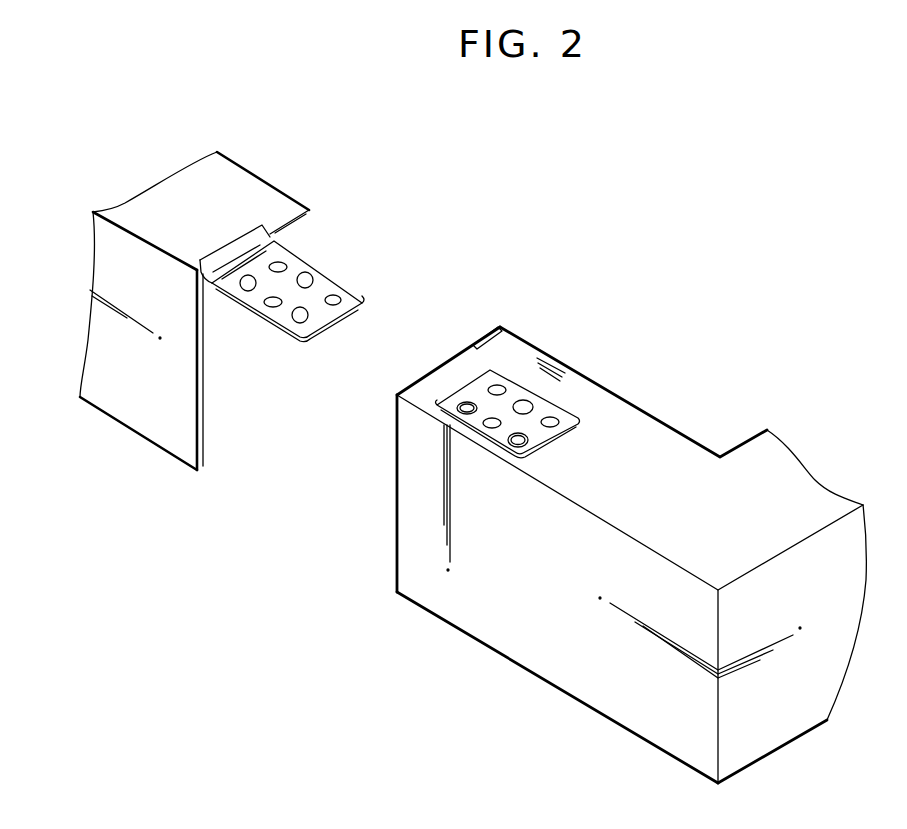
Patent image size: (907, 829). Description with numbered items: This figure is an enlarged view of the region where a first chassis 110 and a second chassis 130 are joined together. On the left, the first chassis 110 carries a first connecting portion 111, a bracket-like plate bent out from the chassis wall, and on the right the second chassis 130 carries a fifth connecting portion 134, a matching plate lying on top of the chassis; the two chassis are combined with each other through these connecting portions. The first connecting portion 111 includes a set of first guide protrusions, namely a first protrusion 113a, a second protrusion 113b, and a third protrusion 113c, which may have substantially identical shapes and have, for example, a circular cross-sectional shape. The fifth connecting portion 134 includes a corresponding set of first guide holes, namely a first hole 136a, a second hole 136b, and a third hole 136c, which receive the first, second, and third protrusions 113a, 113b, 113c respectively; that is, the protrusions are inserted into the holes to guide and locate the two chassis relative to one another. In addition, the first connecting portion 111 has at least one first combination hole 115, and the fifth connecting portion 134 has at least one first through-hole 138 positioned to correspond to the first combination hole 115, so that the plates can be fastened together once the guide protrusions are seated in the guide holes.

The first chassis 110 is at (223, 183).
The first connecting portion 111 is at (297, 272).
The first protrusion 113a is at (243, 291).
The second protrusion 113b is at (312, 279).
The third protrusion 113c is at (300, 323).
The first combination hole 115 is at (338, 300).
The second chassis 130 is at (648, 450).
The fifth connecting portion 134 is at (496, 378).
The first hole 136a is at (459, 402).
The second hole 136b is at (531, 398).
The third hole 136c is at (506, 441).
The first through-hole 138 is at (553, 418).